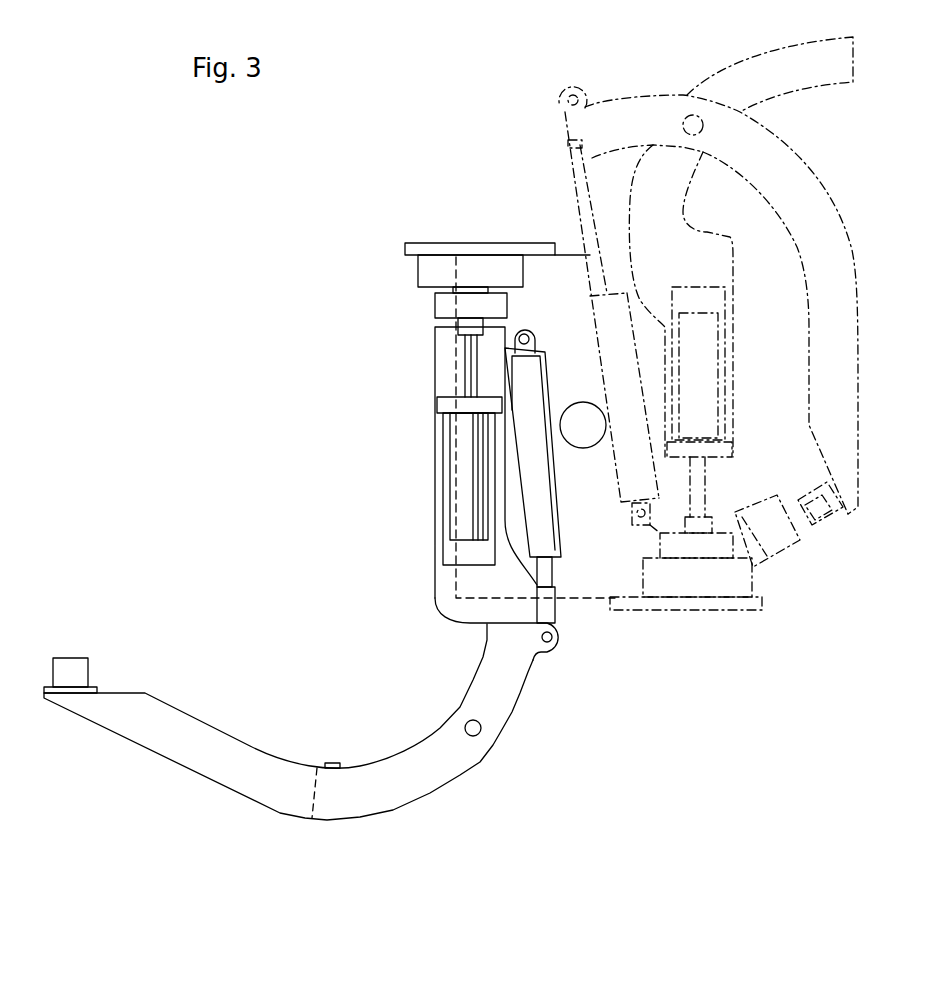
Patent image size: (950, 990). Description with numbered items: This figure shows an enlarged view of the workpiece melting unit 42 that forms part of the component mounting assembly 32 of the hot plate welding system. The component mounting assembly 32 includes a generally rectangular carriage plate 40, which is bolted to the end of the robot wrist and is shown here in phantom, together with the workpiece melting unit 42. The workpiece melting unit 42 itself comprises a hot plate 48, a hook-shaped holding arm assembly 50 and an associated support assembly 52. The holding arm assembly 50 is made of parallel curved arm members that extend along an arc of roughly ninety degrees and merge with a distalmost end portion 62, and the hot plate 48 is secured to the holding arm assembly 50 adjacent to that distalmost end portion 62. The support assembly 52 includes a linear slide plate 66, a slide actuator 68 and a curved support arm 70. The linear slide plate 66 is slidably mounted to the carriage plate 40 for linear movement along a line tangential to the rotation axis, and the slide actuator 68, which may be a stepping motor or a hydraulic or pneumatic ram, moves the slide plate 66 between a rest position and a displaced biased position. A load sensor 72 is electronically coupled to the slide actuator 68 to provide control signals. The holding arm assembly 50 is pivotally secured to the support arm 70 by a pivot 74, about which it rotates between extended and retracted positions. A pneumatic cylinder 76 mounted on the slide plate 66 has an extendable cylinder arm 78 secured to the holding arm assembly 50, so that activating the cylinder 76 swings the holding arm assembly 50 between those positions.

The component mounting assembly 32 is at (333, 438).
The carriage plate 40 is at (620, 562).
The workpiece melting unit 42 is at (455, 540).
The hot plate 48 is at (80, 657).
The holding arm assembly 50 is at (388, 793).
The support assembly 52 is at (443, 601).
The distalmost end portion 62 is at (113, 693).
The linear slide plate 66 is at (440, 352).
The slide actuator 68 is at (457, 462).
The curved support arm 70 is at (298, 775).
The load sensor 72 is at (433, 303).
The pivot 74 is at (481, 731).
The pneumatic cylinder 76 is at (537, 465).
The extendable cylinder arm 78 is at (550, 573).